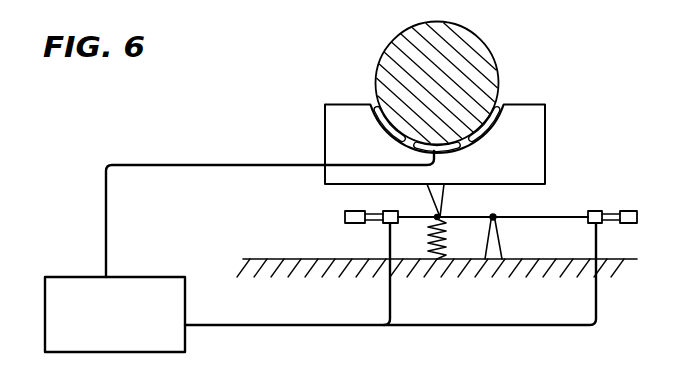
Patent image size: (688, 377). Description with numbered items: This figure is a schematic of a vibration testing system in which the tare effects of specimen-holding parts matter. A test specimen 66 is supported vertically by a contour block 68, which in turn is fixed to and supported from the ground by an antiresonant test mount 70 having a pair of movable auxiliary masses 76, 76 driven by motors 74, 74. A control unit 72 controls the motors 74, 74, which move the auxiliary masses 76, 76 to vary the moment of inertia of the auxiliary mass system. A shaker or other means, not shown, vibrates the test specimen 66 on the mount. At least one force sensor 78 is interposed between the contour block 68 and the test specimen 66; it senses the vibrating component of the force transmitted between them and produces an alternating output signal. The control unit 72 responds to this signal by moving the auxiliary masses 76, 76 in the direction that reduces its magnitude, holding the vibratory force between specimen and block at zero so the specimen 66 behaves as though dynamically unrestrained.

The test specimen 66 is at (484, 42).
The contour block 68 is at (540, 140).
The antiresonant test mount 70 is at (552, 205).
The control unit 72 is at (74, 277).
The motor 74 is at (391, 211).
The auxiliary mass 76 is at (345, 215).
The force sensor 78 is at (450, 152).